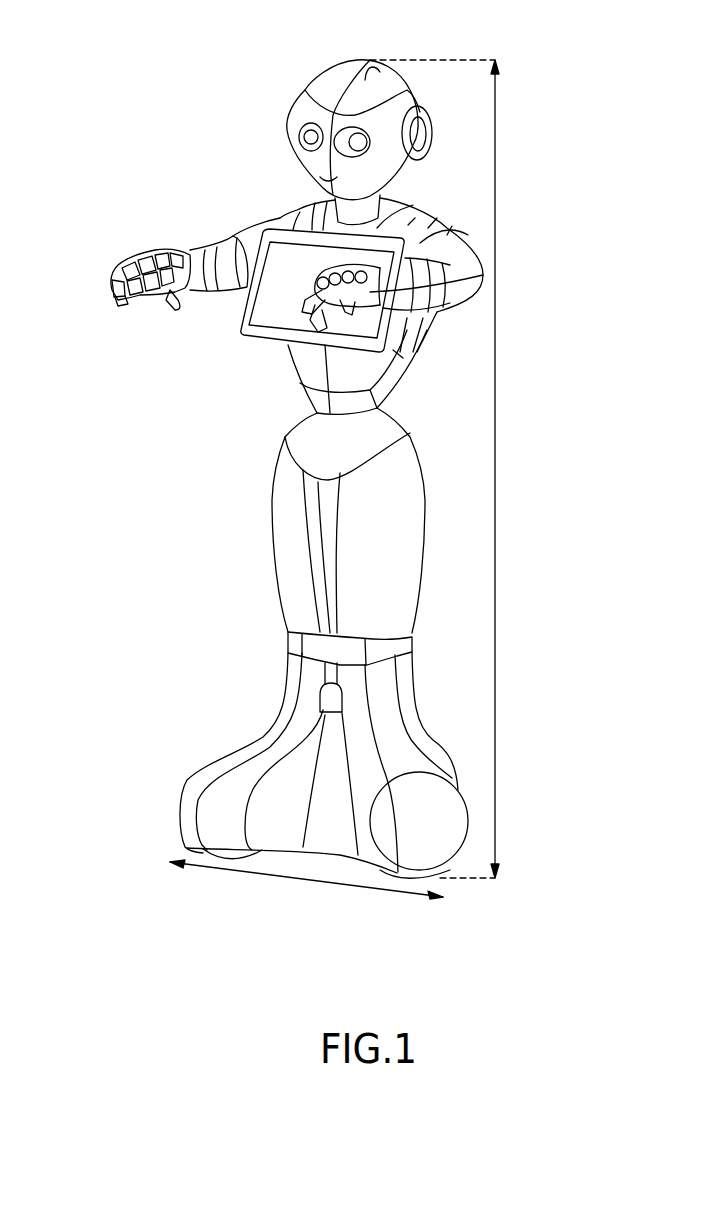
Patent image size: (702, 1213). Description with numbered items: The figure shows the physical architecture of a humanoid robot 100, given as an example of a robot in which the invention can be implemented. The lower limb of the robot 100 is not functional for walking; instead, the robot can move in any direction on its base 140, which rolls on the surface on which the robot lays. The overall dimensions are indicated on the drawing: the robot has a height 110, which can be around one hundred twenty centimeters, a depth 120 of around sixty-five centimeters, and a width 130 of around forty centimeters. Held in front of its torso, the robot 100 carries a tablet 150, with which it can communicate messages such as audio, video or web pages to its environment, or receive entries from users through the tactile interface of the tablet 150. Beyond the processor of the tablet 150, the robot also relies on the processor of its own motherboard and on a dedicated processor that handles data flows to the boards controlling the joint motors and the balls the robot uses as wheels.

The robot 100 is at (252, 537).
The height 110 is at (498, 442).
The depth 120 is at (282, 203).
The width 130 is at (283, 877).
The base 140 is at (172, 800).
The tablet 150 is at (242, 332).